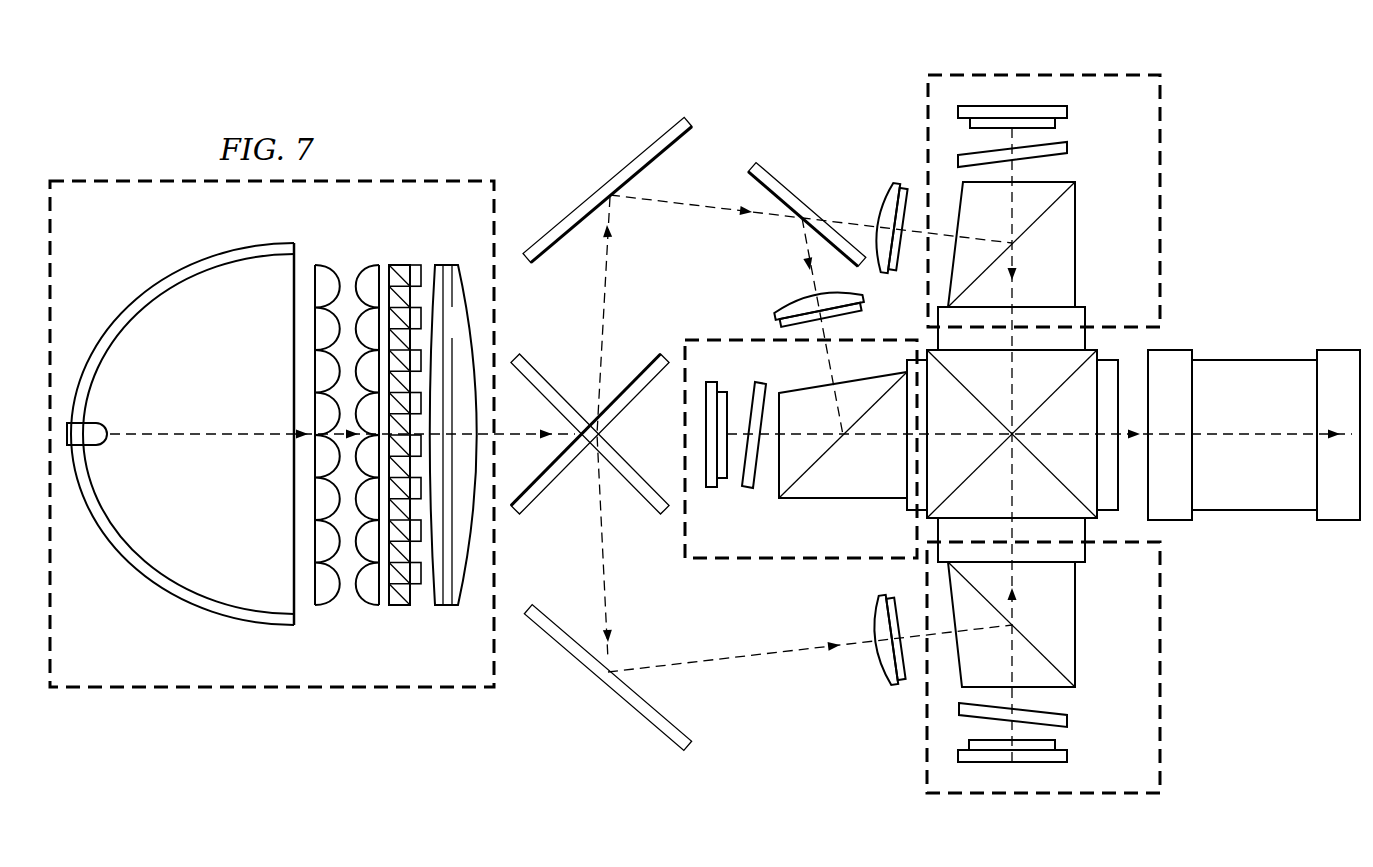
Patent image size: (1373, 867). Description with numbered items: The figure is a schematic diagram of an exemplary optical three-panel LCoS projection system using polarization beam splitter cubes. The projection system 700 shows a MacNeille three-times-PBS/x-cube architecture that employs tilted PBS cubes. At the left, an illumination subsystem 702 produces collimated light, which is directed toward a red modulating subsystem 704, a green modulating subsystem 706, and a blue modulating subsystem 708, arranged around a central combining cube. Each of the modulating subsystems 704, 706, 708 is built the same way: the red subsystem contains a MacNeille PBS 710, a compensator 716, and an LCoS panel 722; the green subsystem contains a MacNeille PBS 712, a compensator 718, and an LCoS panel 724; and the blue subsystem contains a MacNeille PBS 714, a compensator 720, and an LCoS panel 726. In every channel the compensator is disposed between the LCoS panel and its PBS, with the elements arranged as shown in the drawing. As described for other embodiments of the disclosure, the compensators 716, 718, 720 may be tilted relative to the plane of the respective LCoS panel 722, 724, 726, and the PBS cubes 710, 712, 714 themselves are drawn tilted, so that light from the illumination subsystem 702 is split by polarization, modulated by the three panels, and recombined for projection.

The projection system 700 is at (1250, 78).
The illumination subsystem 702 is at (151, 696).
The red modulating subsystem 704 is at (1170, 203).
The green modulating subsystem 706 is at (762, 568).
The blue modulating subsystem 708 is at (1170, 689).
The MacNeille PBS 710 is at (1075, 237).
The MacNeille PBS 712 is at (836, 500).
The MacNeille PBS 714 is at (1075, 633).
The compensator 716 is at (1067, 149).
The compensator 718 is at (757, 382).
The compensator 720 is at (1067, 722).
The LCoS panel 722 is at (1067, 113).
The LCoS panel 724 is at (712, 487).
The LCoS panel 726 is at (1067, 757).